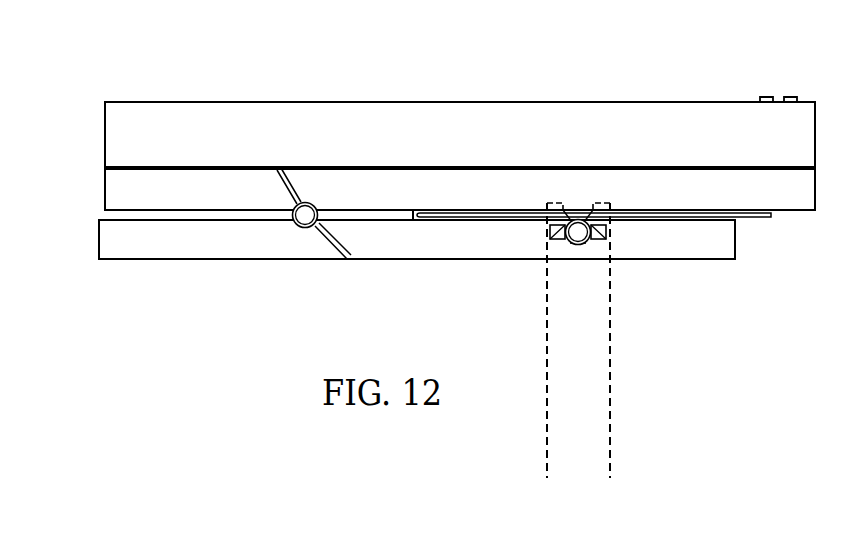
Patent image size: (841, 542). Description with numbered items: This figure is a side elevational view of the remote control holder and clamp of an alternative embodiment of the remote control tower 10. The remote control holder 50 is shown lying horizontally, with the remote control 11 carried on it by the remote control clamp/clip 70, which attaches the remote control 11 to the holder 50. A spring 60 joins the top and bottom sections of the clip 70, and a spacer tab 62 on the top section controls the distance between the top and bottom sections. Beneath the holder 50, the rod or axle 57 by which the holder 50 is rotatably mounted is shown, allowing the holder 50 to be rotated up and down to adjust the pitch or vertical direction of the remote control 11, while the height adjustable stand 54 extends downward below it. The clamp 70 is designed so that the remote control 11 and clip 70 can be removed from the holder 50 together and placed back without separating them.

The remote control tower 10 is at (252, 78).
The remote control 11 is at (503, 103).
The remote control holder unit 50 is at (525, 218).
The height adjustable stand 54 is at (610, 358).
The rod or axle 57 is at (578, 244).
The spring 60 is at (302, 218).
The spacer tab 62 is at (413, 221).
The remote control clamp/clip 70 is at (730, 197).